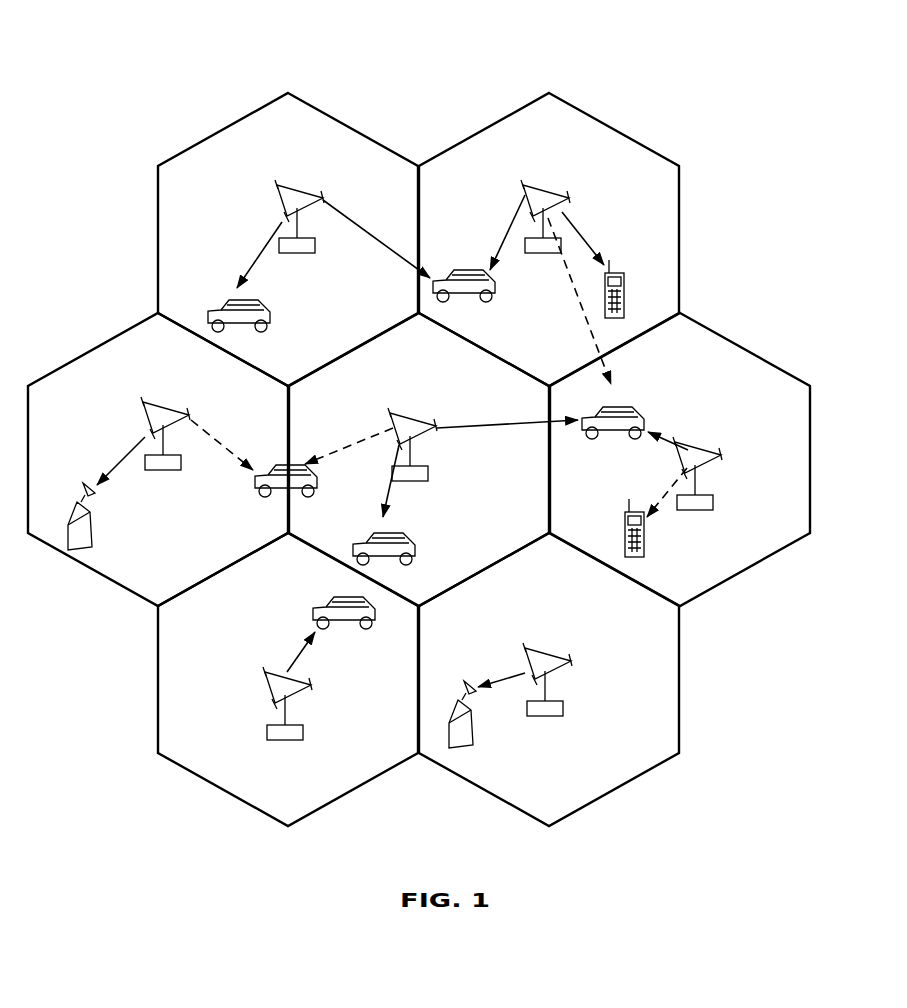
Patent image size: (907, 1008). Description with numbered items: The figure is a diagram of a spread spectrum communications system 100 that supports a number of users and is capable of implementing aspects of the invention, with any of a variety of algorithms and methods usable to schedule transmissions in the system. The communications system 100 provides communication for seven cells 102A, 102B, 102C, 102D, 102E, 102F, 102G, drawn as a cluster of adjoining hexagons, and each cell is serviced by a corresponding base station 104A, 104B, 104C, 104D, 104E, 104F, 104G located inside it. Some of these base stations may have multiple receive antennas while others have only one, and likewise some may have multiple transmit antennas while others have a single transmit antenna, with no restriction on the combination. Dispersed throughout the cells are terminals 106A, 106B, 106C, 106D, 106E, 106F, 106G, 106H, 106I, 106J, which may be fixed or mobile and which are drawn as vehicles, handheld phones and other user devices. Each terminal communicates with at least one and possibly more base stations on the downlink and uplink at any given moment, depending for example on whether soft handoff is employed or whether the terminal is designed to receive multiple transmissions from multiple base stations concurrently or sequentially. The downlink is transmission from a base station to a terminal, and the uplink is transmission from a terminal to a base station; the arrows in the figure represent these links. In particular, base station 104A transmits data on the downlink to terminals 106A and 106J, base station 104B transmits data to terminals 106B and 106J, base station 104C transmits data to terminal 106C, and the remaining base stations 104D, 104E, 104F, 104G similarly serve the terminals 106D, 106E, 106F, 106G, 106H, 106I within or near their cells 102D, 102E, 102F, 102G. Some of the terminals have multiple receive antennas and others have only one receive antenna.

The communications system 100 is at (731, 78).
The cell 102A is at (233, 123).
The cell 102B is at (606, 125).
The cell 102C is at (90, 352).
The cell 102D is at (454, 359).
The cell 102E is at (812, 460).
The cell 102F is at (157, 691).
The cell 102G is at (680, 662).
The base station 104A is at (281, 186).
The base station 104B is at (527, 187).
The base station 104C is at (146, 404).
The base station 104D is at (393, 415).
The base station 104E is at (677, 444).
The base station 104F is at (266, 674).
The base station 104G is at (528, 650).
The terminal 106A is at (236, 300).
The terminal 106B is at (610, 272).
The terminal 106C is at (84, 488).
The terminal 106D is at (383, 534).
The terminal 106E is at (618, 408).
The terminal 106F is at (335, 598).
The terminal 106G is at (464, 685).
The terminal 106H is at (279, 466).
The terminal 106I is at (626, 512).
The terminal 106J is at (471, 272).